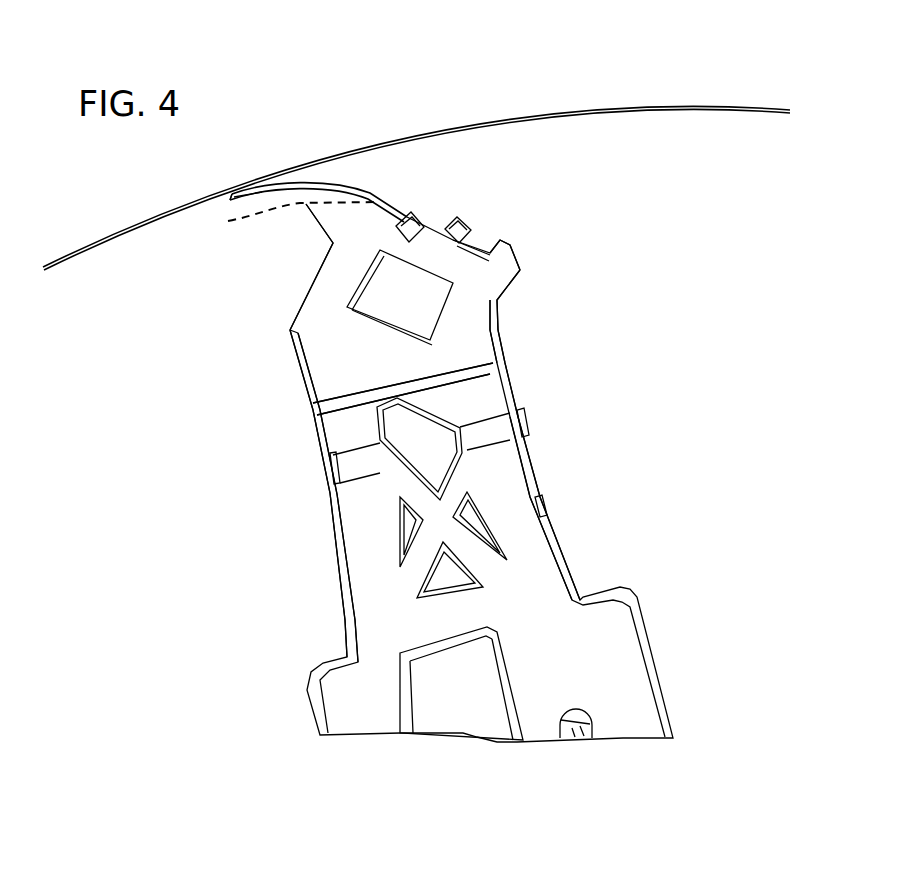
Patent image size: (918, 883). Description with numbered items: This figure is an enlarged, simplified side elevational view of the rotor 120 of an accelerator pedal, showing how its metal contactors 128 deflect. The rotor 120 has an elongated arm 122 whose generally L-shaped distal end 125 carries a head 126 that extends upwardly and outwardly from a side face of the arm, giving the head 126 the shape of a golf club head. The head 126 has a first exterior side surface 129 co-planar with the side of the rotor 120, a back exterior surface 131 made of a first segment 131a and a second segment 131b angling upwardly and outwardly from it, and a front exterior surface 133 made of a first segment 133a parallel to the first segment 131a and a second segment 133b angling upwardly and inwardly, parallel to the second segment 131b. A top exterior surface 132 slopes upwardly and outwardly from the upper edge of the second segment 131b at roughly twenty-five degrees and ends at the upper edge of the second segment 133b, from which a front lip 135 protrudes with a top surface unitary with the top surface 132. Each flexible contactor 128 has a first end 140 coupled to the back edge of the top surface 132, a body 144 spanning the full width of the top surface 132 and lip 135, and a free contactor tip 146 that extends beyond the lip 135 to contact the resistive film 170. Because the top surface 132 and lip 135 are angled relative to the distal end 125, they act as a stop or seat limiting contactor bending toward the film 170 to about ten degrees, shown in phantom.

The rotor 120 is at (655, 374).
The elongated arm 122 is at (605, 673).
The distal end 125 is at (493, 383).
The head 126 is at (463, 320).
The metal contactors 128 is at (310, 187).
The first exterior side surface 129 is at (330, 303).
The back exterior surface 131 is at (500, 320).
The first segment of back surface 131a is at (541, 508).
The second segment of back surface 131b is at (487, 297).
The top exterior surface 132 is at (463, 214).
The front exterior surface 133 is at (289, 367).
The first segment of front surface 133a is at (339, 536).
The second segment of front surface 133b is at (307, 283).
The front lip 135 is at (333, 218).
The first end of contactor 140 is at (478, 242).
The contactor body 144 is at (400, 210).
The distal free contactor end 146 is at (260, 193).
The resistive film 170 is at (480, 118).